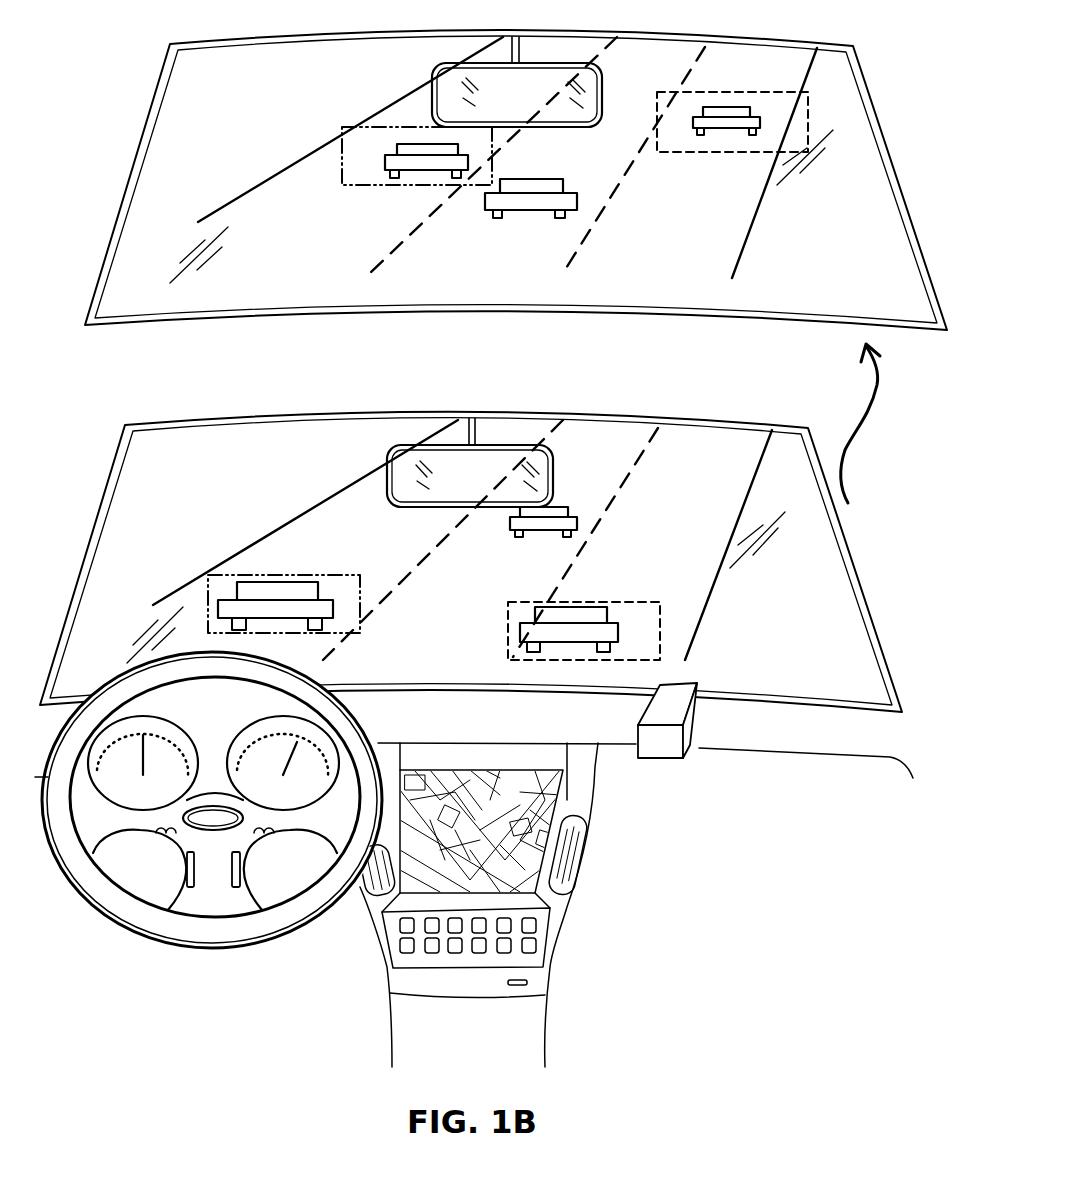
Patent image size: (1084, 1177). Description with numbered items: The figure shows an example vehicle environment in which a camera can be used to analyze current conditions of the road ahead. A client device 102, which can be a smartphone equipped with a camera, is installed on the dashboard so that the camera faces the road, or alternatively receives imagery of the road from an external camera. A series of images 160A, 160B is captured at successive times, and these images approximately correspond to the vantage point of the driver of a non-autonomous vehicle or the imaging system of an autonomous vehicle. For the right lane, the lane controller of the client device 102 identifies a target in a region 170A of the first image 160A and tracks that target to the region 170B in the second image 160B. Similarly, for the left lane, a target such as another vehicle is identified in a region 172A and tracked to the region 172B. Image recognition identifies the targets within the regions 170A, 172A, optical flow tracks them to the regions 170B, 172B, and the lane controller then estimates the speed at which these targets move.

The image 160A is at (143, 466).
The image 160B is at (190, 86).
The region 170A is at (653, 602).
The region 170B is at (778, 92).
The region 172A is at (228, 574).
The region 172B is at (345, 127).
The client device 102 is at (675, 758).